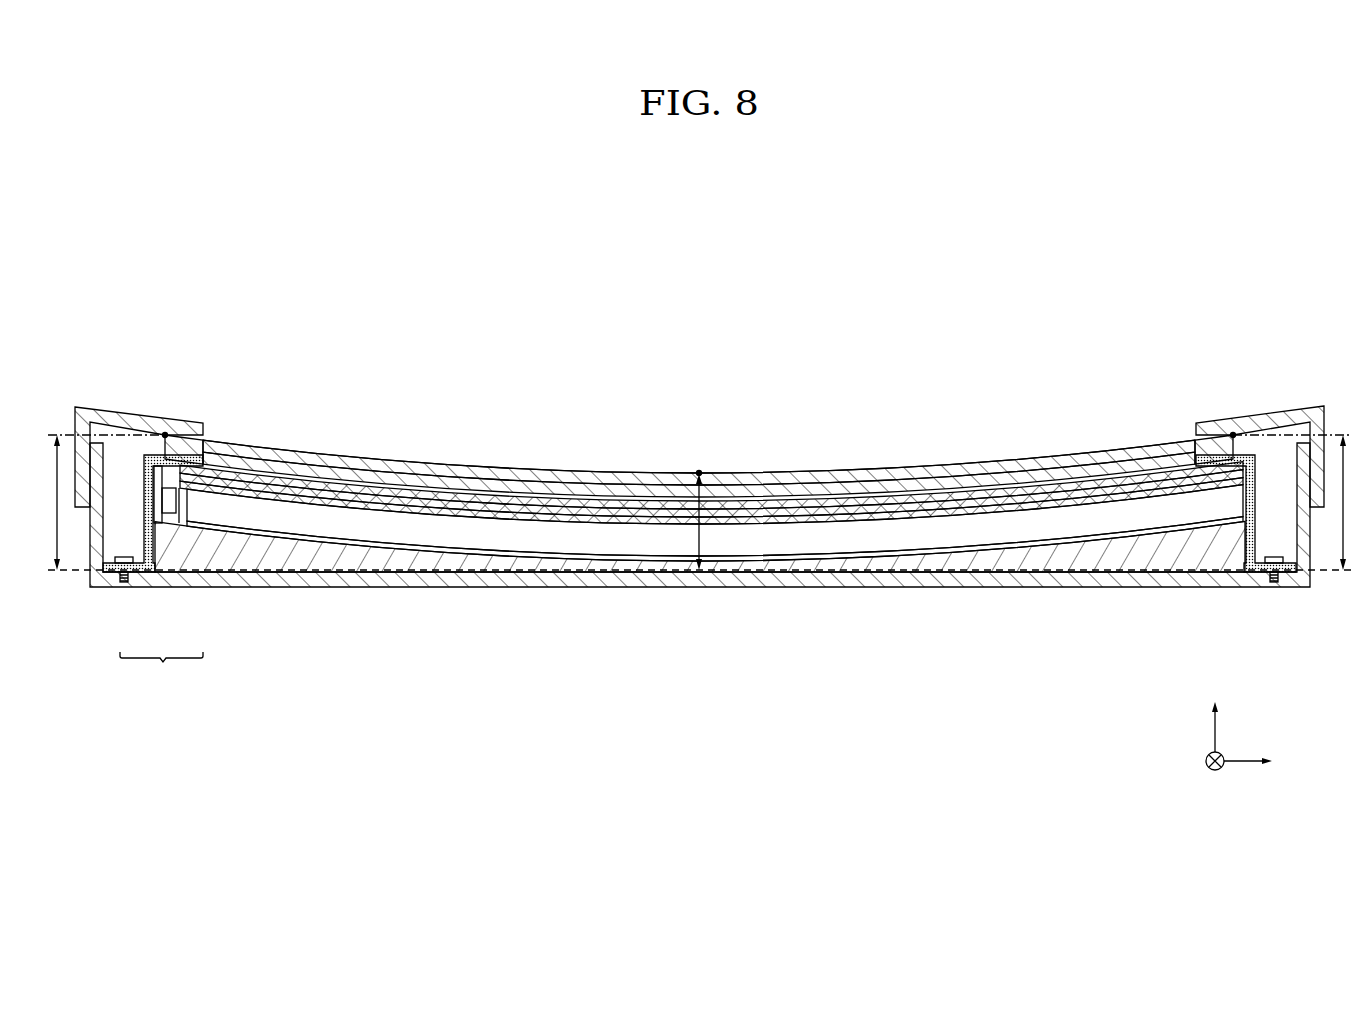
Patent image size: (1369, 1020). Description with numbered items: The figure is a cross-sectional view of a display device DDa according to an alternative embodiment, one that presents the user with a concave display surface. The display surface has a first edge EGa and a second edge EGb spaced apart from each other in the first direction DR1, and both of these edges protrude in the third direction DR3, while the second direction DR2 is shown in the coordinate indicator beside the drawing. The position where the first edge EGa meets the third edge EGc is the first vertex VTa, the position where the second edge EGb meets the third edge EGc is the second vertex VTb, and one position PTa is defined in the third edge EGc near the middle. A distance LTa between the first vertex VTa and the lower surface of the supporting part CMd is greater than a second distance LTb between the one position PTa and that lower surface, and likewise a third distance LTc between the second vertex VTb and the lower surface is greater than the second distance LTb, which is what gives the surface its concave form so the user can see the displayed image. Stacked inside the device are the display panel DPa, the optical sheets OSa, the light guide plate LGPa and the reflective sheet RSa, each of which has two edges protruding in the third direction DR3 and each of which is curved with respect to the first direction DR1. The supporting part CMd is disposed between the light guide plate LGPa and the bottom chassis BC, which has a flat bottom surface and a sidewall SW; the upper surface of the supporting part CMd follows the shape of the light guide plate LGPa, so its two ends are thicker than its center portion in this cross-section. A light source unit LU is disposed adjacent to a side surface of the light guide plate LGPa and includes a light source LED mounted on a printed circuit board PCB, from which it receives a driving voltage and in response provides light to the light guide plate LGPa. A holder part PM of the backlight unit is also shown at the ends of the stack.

The display device DDa is at (1094, 354).
The bottom chassis BC is at (112, 578).
The supporting part CMd is at (285, 556).
The holder part PM is at (145, 483).
The sidewall SW is at (1272, 587).
The printed circuit board PCB is at (157, 500).
The light source LED is at (170, 506).
The light source unit LU is at (161, 672).
The light guide plate LGPa is at (546, 540).
The reflective sheet RSa is at (432, 549).
The optical sheets OSa is at (900, 494).
The display panel DPa is at (490, 461).
The first edge EGa is at (157, 432).
The second edge EGb is at (1244, 425).
The third edge EGc is at (300, 449).
The first vertex VTa is at (168, 433).
The second vertex VTb is at (1231, 433).
The one position PTa is at (699, 471).
The distance LTa is at (56, 530).
The second distance LTb is at (718, 522).
The third distance LTc is at (1343, 573).
The first direction DR1 is at (1268, 760).
The second direction DR2 is at (1215, 777).
The third direction DR3 is at (1215, 715).